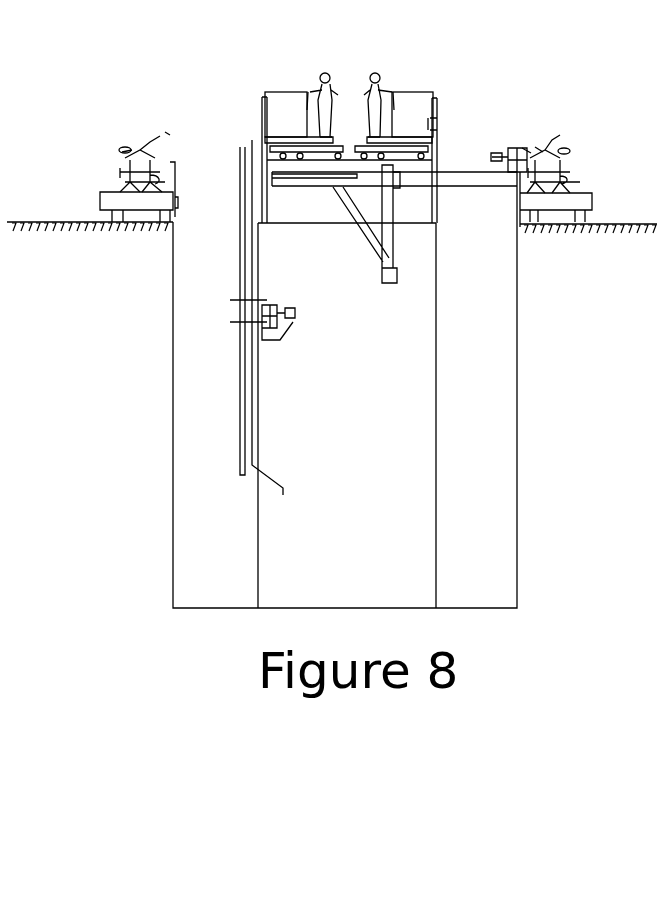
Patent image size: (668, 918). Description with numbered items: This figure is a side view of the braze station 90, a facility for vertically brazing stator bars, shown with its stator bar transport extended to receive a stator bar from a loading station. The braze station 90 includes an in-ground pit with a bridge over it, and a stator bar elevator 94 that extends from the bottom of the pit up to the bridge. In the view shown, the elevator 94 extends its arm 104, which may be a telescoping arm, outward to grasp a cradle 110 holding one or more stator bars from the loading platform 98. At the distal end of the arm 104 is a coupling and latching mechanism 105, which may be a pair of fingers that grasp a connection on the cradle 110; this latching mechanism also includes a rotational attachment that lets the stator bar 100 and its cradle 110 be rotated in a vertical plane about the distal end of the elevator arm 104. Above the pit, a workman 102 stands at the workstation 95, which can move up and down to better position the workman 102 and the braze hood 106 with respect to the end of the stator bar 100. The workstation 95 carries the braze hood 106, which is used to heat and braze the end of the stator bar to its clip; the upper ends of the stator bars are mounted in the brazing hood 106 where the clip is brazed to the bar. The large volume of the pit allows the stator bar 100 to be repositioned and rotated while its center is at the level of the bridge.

The braze station 90 is at (517, 357).
The stator bar elevator 94 is at (398, 250).
The workstation 95 is at (436, 126).
The loading platform 98 is at (100, 200).
The stator bar 100 is at (283, 112).
The workman 102 is at (376, 73).
The arm 104 is at (460, 184).
The coupling and latching mechanism 105 is at (512, 148).
The braze hood 106 is at (440, 96).
The cradle 110 is at (242, 407).